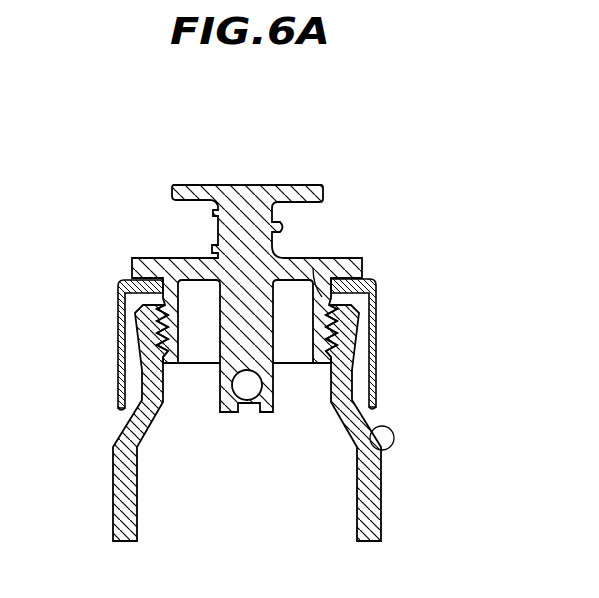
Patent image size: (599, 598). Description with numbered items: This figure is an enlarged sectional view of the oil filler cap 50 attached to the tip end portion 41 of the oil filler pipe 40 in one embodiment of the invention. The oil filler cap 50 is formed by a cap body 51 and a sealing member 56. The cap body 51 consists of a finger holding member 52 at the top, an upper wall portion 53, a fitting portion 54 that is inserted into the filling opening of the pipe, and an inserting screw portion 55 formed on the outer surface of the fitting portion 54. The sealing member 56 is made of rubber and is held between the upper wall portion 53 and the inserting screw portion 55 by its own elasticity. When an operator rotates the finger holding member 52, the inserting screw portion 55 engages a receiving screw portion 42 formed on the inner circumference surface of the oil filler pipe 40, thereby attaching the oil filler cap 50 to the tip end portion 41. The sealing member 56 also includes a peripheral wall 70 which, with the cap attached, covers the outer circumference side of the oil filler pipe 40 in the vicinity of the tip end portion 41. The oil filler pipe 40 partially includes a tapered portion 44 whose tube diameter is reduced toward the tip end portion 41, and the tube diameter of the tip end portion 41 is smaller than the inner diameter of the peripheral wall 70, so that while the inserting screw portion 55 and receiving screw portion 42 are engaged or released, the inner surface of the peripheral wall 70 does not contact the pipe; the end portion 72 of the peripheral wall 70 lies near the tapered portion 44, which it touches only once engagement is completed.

The oil filler pipe 40 is at (125, 500).
The tip end portion 41 is at (345, 309).
The receiving screw portion 42 is at (337, 338).
The tapered portion 44 is at (355, 448).
The oil filler cap 50 is at (496, 220).
The cap body 51 is at (445, 231).
The finger holding member 52 is at (320, 191).
The upper wall portion 53 is at (313, 272).
The fitting portion 54 is at (333, 269).
The inserting screw portion 55 is at (333, 276).
The sealing member 56 is at (376, 278).
The peripheral wall 70 is at (378, 382).
The end portion 72 is at (118, 408).